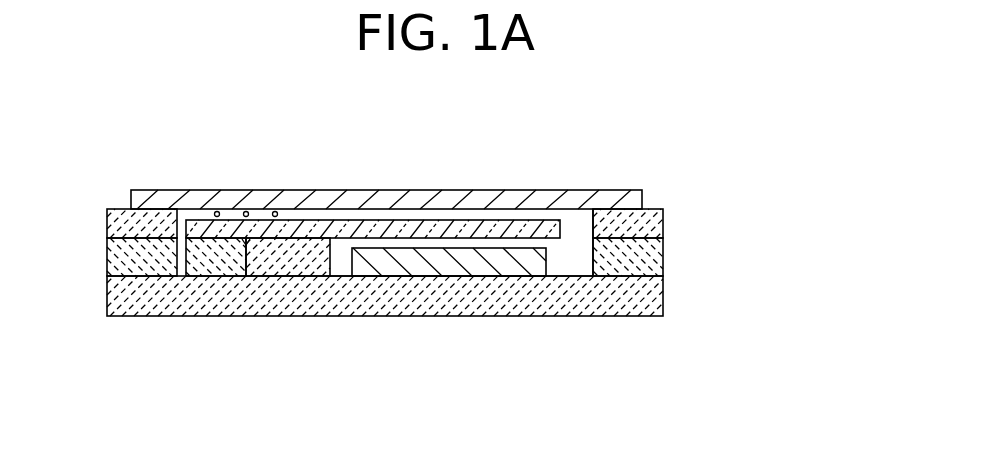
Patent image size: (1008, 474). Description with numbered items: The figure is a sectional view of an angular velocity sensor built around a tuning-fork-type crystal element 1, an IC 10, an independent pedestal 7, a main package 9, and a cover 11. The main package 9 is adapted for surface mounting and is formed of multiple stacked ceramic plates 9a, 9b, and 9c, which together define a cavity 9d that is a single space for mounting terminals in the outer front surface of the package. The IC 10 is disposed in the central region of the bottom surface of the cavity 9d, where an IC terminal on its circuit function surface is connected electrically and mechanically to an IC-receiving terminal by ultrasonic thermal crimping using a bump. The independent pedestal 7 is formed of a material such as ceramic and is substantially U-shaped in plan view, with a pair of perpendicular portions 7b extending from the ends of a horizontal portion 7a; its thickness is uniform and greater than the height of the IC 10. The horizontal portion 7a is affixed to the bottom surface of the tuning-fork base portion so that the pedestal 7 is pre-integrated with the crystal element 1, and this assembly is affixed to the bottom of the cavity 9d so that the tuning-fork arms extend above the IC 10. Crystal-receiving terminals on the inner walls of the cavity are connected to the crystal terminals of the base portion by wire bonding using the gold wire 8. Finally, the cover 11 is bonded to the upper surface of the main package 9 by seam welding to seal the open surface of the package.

The tuning-fork-type crystal element 1 is at (373, 212).
The independent pedestal 7 is at (294, 325).
The horizontal portion 7a is at (228, 268).
The perpendicular portions 7b is at (310, 268).
The gold wire 8 is at (275, 211).
The main package 9 is at (445, 297).
The ceramic plate 9a is at (653, 297).
The ceramic plate 9b is at (653, 262).
The ceramic plate 9c is at (653, 223).
The cavity 9d is at (560, 265).
The IC 10 is at (448, 268).
The cover 11 is at (519, 191).